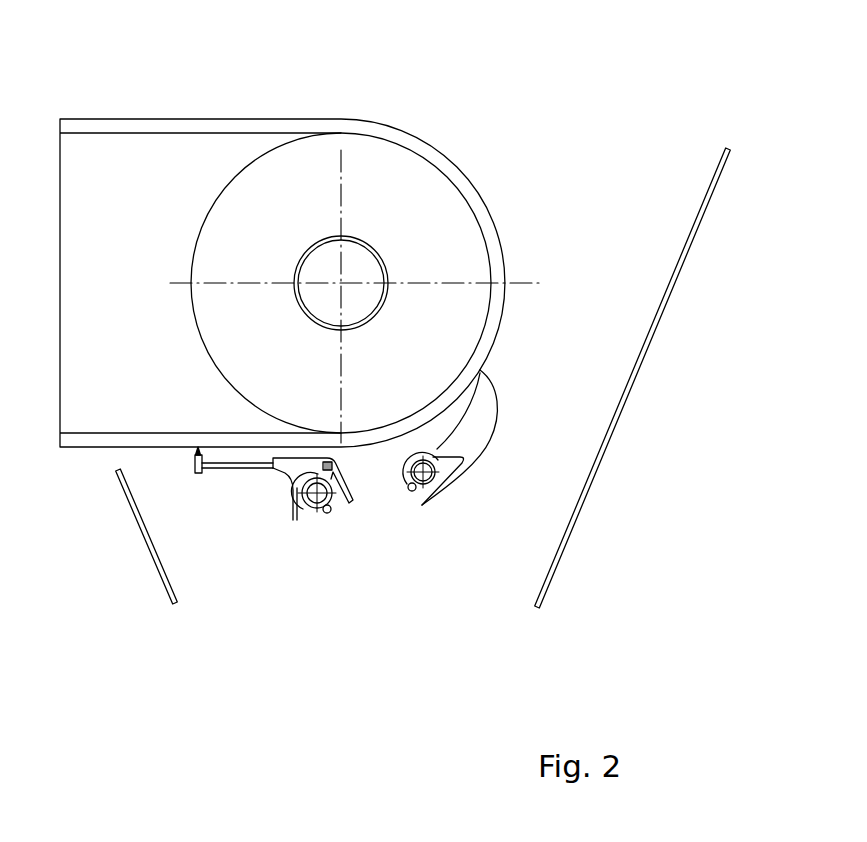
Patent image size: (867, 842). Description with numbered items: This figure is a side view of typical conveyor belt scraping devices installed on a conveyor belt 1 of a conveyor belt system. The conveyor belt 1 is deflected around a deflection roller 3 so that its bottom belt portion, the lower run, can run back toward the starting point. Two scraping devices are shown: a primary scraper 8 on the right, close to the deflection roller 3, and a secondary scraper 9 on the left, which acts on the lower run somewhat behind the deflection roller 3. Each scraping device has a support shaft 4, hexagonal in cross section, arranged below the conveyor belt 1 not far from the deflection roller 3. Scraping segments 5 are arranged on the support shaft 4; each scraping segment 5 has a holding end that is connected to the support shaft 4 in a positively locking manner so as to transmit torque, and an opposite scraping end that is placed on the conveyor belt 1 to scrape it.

The conveyor belt 1 is at (168, 119).
The deflection roller 3 is at (383, 167).
The support shaft 4 is at (308, 515).
The scraping segment 5 is at (268, 470).
The primary scraper 8 is at (465, 514).
The secondary scraper 9 is at (276, 518).